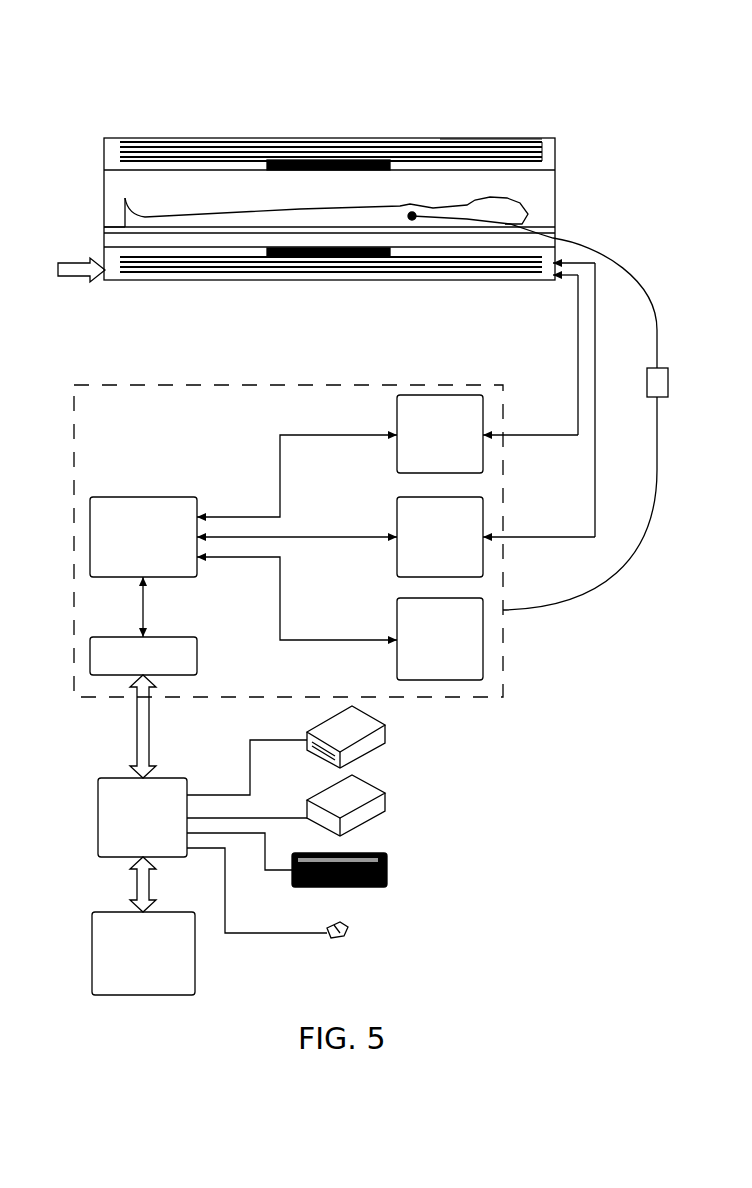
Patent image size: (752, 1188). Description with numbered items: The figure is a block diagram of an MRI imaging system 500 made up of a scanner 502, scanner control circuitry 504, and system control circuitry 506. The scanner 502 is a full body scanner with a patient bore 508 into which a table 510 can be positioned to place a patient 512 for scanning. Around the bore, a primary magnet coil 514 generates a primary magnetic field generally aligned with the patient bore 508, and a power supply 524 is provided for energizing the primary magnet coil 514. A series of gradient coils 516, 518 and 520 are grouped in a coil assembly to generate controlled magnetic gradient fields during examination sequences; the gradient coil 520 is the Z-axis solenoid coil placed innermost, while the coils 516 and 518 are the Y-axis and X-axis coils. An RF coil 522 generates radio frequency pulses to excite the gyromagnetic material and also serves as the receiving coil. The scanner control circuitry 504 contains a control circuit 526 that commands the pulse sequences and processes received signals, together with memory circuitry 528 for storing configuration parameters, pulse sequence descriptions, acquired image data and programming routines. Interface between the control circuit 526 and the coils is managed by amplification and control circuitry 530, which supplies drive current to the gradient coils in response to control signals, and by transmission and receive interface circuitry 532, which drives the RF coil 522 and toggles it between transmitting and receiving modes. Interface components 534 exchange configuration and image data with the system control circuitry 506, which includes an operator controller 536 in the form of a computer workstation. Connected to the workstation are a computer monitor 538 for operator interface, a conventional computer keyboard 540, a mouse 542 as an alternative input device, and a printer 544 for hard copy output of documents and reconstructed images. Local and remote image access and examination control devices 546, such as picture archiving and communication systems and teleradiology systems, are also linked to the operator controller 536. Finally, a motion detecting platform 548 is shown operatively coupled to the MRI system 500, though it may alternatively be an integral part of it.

The MRI imaging system 500 is at (586, 46).
The scanner 502 is at (556, 182).
The scanner control circuitry 504 is at (250, 383).
The system control circuitry 506 is at (480, 806).
The patient bore 508 is at (103, 237).
The table 510 is at (112, 225).
The patient 512 is at (165, 218).
The primary magnet coil 514 is at (372, 140).
The gradient coil 516 is at (462, 142).
The gradient coil 518 is at (518, 152).
The gradient coil 520 is at (545, 165).
The RF coil 522 is at (330, 160).
The power supply 524 is at (72, 283).
The control circuit 526 is at (145, 497).
The memory circuitry 528 is at (490, 640).
The amplification and control circuitry 530 is at (435, 395).
The transmission and receive interface circuitry 532 is at (490, 508).
The interface components 534 is at (172, 637).
The operator controller 536 is at (98, 832).
The computer monitor 538 is at (387, 732).
The computer keyboard 540 is at (387, 870).
The mouse 542 is at (350, 935).
The printer 544 is at (387, 800).
The image access and examination control devices 546 is at (92, 962).
The motion detecting platform 548 is at (668, 368).